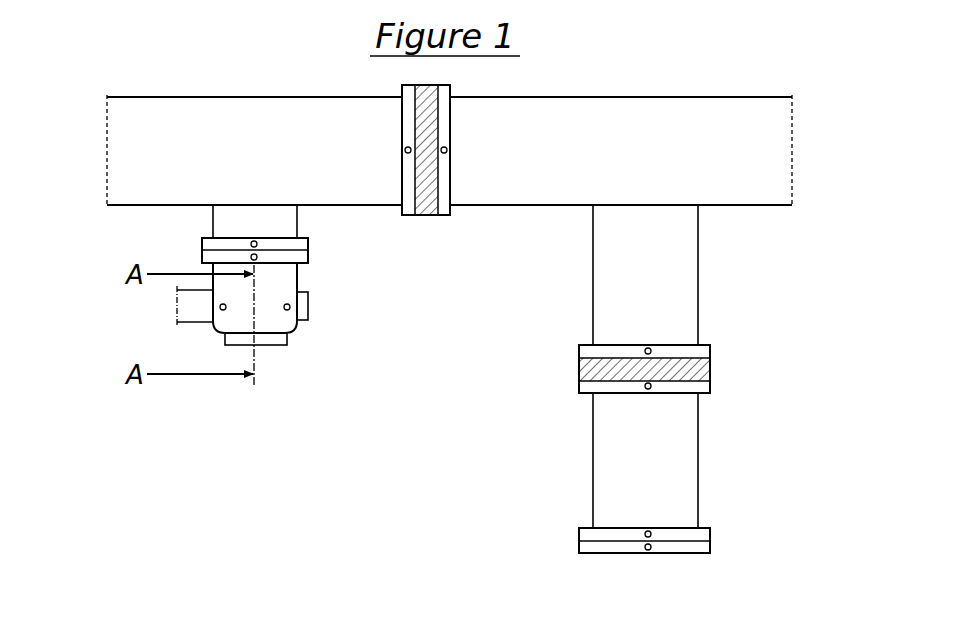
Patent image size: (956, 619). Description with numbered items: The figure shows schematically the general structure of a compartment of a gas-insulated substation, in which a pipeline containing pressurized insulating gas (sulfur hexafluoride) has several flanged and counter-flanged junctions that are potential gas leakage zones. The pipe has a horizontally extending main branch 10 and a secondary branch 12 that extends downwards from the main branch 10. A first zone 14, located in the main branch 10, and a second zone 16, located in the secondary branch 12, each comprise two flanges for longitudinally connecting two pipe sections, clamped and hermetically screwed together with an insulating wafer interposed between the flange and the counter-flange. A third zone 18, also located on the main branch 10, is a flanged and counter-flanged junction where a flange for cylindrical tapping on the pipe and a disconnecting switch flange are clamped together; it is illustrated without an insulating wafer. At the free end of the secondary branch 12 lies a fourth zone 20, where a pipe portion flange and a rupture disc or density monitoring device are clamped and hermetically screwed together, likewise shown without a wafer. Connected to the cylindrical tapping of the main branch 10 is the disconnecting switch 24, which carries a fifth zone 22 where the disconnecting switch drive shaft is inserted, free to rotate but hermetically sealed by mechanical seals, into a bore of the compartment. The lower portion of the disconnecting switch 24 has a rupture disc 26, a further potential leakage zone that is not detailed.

The main branch 10 is at (449, 151).
The secondary branch 12 is at (645, 366).
The first zone 14 is at (424, 230).
The second zone 16 is at (722, 371).
The third zone 18 is at (185, 252).
The fourth zone 20 is at (722, 542).
The fifth zone 22 is at (303, 325).
The disconnecting switch 24 is at (237, 324).
The rupture disc 26 is at (267, 346).